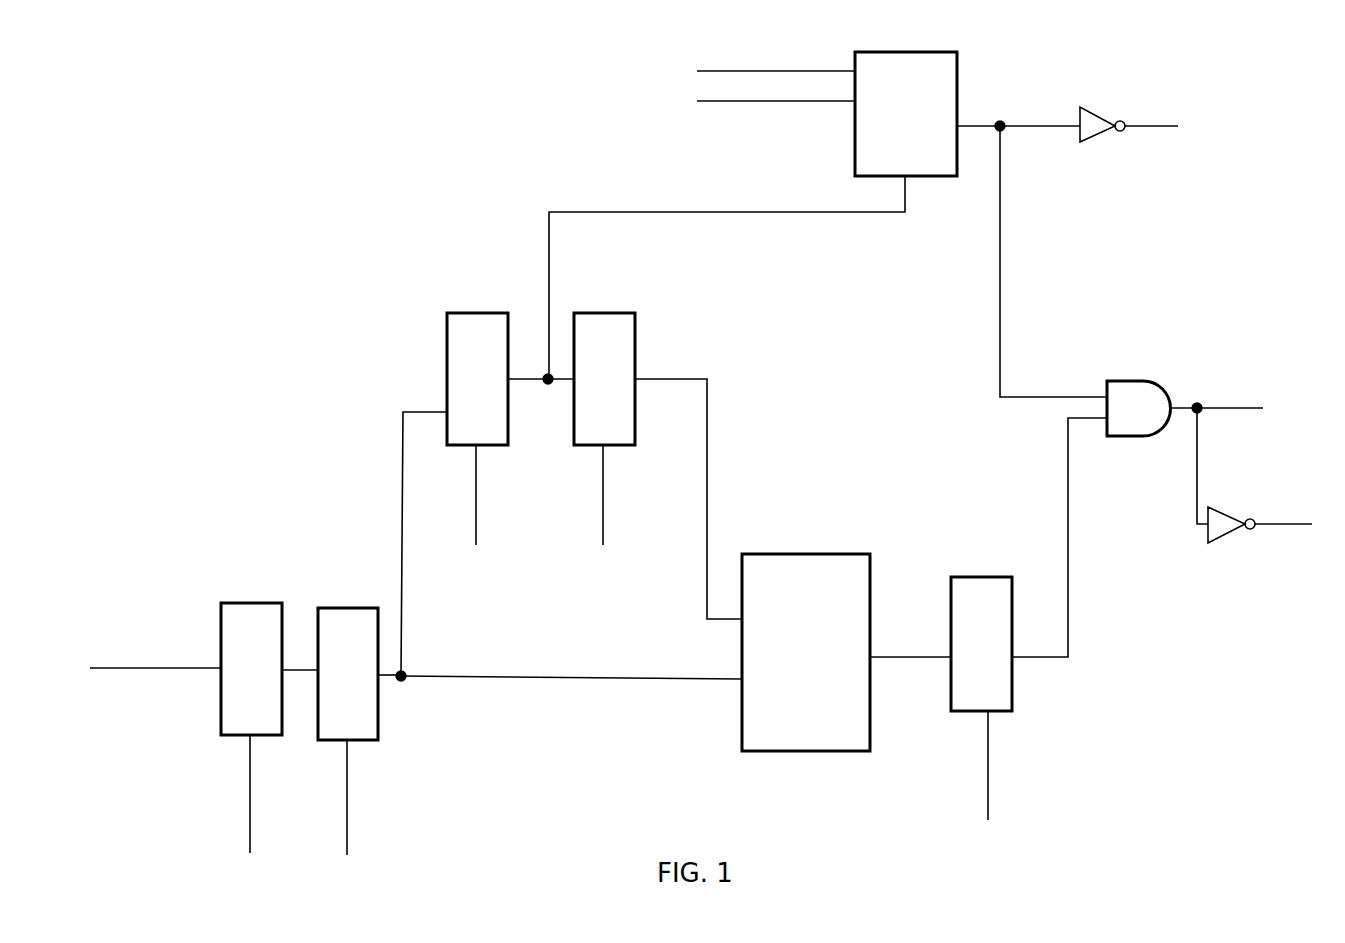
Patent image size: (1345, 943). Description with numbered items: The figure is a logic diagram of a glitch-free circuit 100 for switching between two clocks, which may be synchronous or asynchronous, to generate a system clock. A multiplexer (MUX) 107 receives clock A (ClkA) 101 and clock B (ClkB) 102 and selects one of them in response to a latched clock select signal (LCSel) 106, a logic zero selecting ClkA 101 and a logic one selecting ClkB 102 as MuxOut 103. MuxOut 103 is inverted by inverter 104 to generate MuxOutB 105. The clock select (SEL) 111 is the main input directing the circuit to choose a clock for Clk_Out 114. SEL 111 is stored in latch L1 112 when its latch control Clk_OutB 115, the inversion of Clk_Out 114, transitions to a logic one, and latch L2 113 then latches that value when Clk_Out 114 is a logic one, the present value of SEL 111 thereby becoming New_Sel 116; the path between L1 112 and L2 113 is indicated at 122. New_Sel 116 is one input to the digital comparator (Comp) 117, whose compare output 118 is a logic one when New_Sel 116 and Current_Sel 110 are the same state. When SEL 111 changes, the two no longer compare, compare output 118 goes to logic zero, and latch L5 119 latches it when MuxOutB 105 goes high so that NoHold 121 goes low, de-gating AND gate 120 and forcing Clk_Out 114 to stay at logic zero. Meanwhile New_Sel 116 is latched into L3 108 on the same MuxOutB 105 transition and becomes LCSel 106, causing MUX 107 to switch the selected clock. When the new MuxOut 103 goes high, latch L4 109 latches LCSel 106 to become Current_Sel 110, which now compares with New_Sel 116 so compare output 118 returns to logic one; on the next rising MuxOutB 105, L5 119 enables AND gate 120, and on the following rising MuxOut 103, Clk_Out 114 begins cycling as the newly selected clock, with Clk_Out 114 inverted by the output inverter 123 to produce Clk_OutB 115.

The glitch-free circuit 100 is at (405, 160).
The clock A (ClkA) 101 is at (705, 70).
The clock B (ClkB) 102 is at (705, 101).
The MuxOut 103 is at (1027, 128).
The inverter 104 is at (1097, 112).
The MuxOutB 105 is at (1157, 127).
The latched clock select signal (LCSel) 106 is at (672, 212).
The multiplexer (MUX) 107 is at (898, 52).
The latch L3 108 is at (478, 312).
The latch L4 109 is at (620, 315).
The Current_Sel 110 is at (707, 418).
The clock select (SEL) 111 is at (162, 669).
The latch L1 112 is at (252, 603).
The latch L2 113 is at (350, 608).
The Clk_Out 114 is at (348, 787).
The Clk_OutB 115 is at (244, 787).
The New_Sel 116 is at (562, 677).
The digital comparator (Comp) 117 is at (807, 553).
The compare output 118 is at (891, 657).
The latch L5 119 is at (987, 577).
The AND gate 120 is at (1128, 380).
The NoHold 121 is at (1055, 660).
The L1 to L2 connection 122 is at (293, 677).
The output inverter 123 is at (1223, 510).